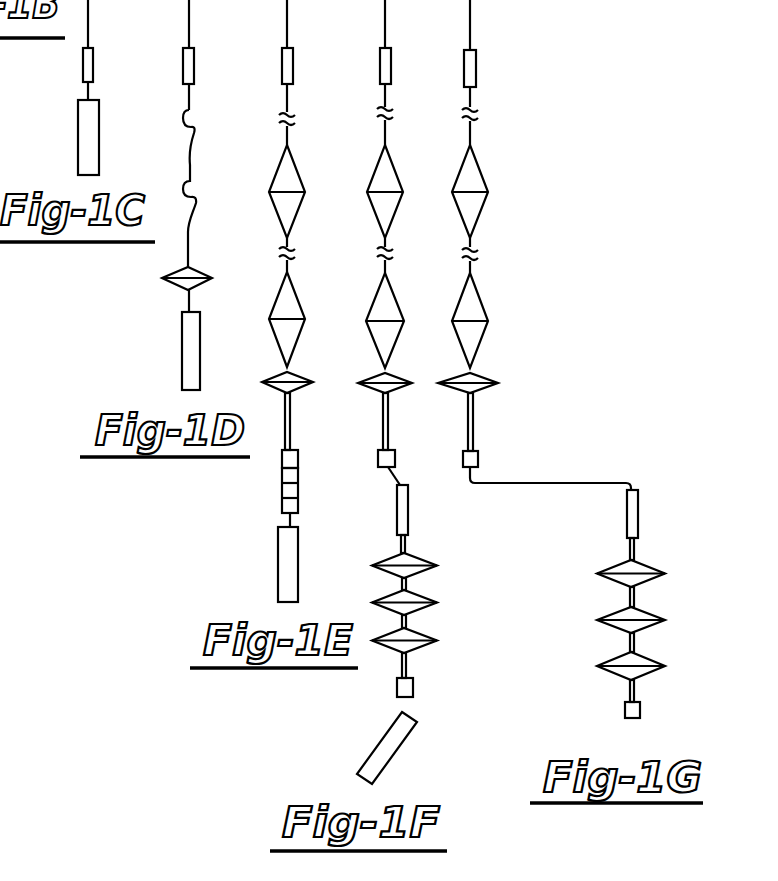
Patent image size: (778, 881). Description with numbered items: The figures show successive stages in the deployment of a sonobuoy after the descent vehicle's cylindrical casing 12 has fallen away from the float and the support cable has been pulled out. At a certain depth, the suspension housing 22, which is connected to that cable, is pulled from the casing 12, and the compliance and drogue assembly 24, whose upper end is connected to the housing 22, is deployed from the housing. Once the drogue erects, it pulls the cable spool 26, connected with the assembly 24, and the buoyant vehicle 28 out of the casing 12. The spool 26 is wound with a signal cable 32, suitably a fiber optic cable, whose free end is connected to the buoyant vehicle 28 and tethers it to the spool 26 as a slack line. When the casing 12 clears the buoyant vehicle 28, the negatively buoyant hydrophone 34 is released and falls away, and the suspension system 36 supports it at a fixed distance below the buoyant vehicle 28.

In FIG. 1C, the cylindrical casing 12 is at (78, 122).
In FIG. 1D, the cylindrical casing 12 is at (182, 357).
In FIG. 1E, the cylindrical casing 12 is at (278, 553).
In FIG. 1F, the cylindrical casing 12 is at (380, 742).
In FIG. 1C, the suspension housing 22 is at (93, 60).
In FIG. 1D, the suspension housing 22 is at (195, 58).
In FIG. 1E, the suspension housing 22 is at (293, 60).
In FIG. 1F, the suspension housing 22 is at (391, 58).
In FIG. 1G, the suspension housing 22 is at (477, 53).
In FIG. 1D, the compliance and drogue assembly 24 is at (190, 162).
In FIG. 1E, the compliance and drogue assembly 24 is at (302, 222).
In FIG. 1F, the compliance and drogue assembly 24 is at (402, 217).
In FIG. 1G, the compliance and drogue assembly 24 is at (487, 230).
In FIG. 1E, the cable spool 26 is at (282, 460).
In FIG. 1F, the cable spool 26 is at (378, 455).
In FIG. 1G, the cable spool 26 is at (463, 460).
In FIG. 1E, the buoyant vehicle 28 is at (298, 485).
In FIG. 1F, the buoyant vehicle 28 is at (409, 517).
In FIG. 1G, the buoyant vehicle 28 is at (627, 513).
In FIG. 1G, the signal cable 32 is at (550, 480).
In FIG. 1G, the hydrophone 34 is at (625, 712).
In FIG. 1F, the suspension system 36 is at (427, 598).
In FIG. 1G, the suspension system 36 is at (650, 608).